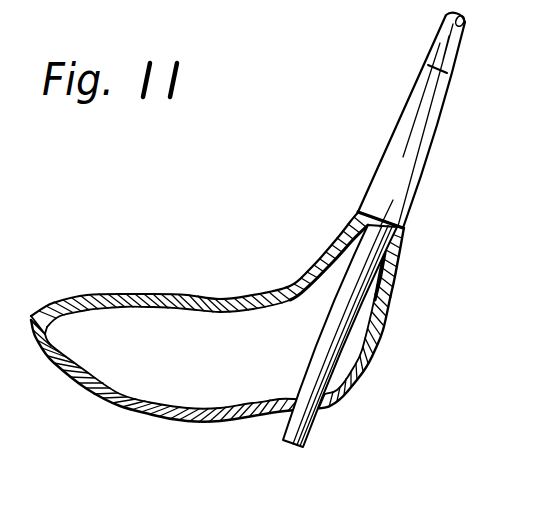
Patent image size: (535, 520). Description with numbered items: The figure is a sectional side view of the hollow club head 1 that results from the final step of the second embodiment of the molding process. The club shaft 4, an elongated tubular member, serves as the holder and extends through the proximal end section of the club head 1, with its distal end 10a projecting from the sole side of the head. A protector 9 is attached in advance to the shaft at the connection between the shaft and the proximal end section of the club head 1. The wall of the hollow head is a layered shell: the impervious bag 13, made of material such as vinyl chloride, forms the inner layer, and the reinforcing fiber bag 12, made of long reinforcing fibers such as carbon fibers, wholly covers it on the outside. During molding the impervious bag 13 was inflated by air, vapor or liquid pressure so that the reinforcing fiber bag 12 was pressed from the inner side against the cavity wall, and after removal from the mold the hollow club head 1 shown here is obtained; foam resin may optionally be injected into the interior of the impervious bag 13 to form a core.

The club head 1 is at (225, 222).
The club shaft 4 is at (455, 52).
The protector 9 is at (421, 158).
The distal end 10a is at (312, 427).
The reinforcing fiber bag 12 is at (229, 412).
The impervious bag 13 is at (180, 405).